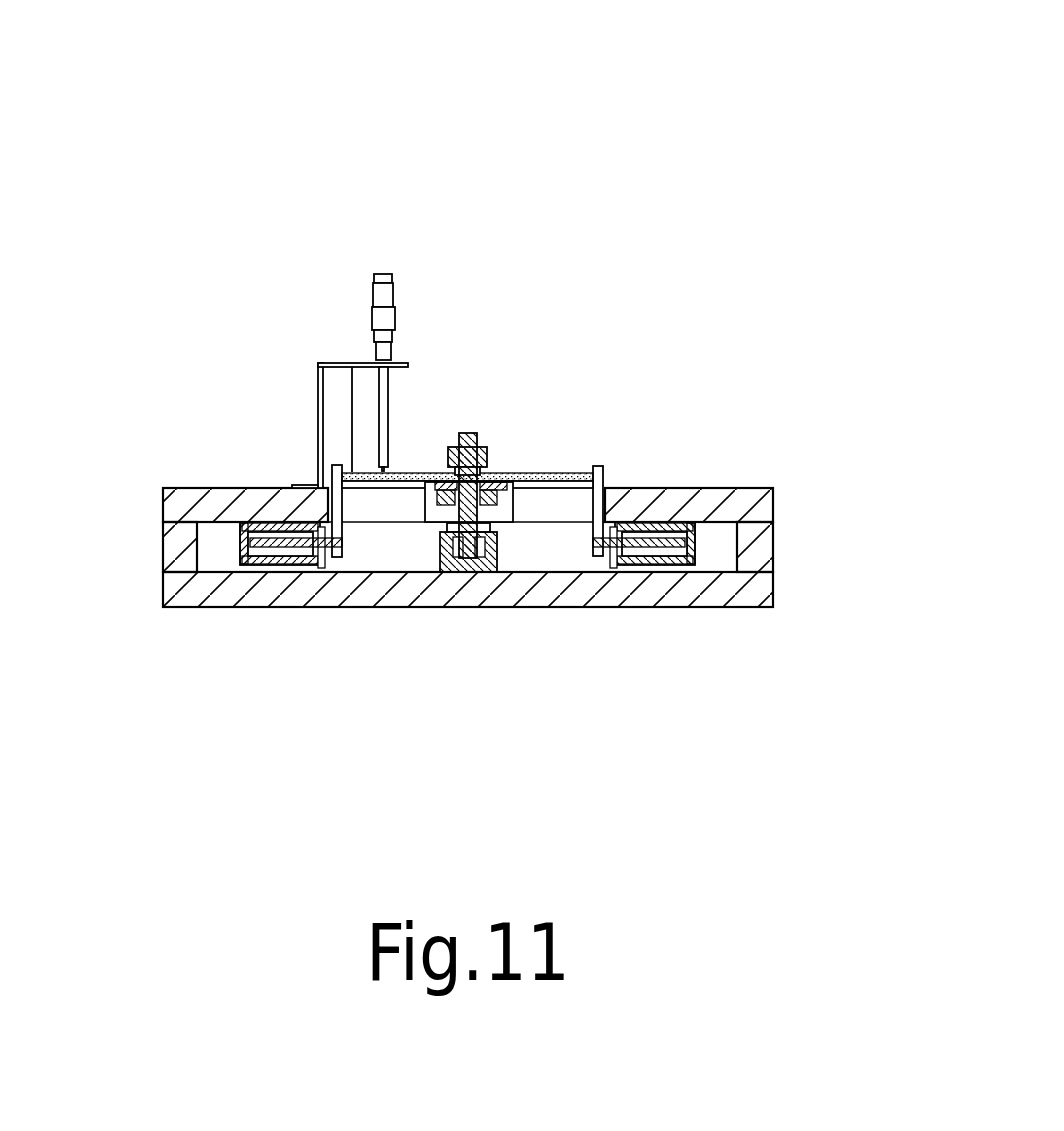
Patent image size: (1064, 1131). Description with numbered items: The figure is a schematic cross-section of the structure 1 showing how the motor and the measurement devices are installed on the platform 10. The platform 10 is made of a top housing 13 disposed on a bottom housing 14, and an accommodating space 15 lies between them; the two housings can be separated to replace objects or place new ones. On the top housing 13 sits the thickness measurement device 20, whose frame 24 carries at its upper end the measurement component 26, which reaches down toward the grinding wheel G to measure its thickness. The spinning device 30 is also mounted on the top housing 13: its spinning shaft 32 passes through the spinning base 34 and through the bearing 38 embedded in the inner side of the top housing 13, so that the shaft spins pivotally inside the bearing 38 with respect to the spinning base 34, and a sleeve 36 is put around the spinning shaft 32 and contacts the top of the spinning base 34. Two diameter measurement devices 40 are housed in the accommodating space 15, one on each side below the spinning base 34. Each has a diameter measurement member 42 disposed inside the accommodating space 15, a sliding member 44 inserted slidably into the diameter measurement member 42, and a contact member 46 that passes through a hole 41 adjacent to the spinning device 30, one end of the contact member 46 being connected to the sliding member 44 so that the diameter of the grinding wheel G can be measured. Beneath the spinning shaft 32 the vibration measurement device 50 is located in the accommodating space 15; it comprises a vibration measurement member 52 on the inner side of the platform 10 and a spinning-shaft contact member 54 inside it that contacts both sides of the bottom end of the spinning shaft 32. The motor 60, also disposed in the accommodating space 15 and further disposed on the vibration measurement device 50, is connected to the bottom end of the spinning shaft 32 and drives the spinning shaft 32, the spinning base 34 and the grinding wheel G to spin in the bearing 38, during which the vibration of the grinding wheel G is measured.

The measuring apparatus 1 is at (796, 53).
The platform 10 is at (158, 473).
The top housing 13 is at (187, 487).
The bottom housing 14 is at (755, 607).
The accommodating space 15 is at (422, 567).
The thickness measurement device 20 is at (328, 330).
The frame 24 is at (317, 412).
The measurement component 26 is at (380, 273).
The spinning device 30 is at (542, 372).
The spinning shaft 32 is at (465, 433).
The spinning base 34 is at (515, 473).
The sleeve 36 is at (453, 453).
The bearing 38 is at (497, 492).
The diameter measurement device 40 is at (237, 543).
The hole 41 is at (383, 503).
The diameter measurement member 42 is at (240, 553).
The sliding member 44 is at (312, 560).
The contact member 46 is at (338, 548).
The vibration measurement device 50 is at (522, 653).
The vibration measurement member 52 is at (497, 548).
The spinning-shaft contact member 54 is at (462, 548).
The motor 60 is at (505, 540).
The grinding wheel G is at (568, 473).